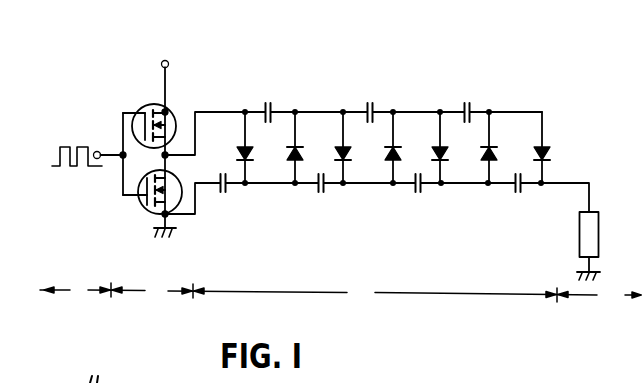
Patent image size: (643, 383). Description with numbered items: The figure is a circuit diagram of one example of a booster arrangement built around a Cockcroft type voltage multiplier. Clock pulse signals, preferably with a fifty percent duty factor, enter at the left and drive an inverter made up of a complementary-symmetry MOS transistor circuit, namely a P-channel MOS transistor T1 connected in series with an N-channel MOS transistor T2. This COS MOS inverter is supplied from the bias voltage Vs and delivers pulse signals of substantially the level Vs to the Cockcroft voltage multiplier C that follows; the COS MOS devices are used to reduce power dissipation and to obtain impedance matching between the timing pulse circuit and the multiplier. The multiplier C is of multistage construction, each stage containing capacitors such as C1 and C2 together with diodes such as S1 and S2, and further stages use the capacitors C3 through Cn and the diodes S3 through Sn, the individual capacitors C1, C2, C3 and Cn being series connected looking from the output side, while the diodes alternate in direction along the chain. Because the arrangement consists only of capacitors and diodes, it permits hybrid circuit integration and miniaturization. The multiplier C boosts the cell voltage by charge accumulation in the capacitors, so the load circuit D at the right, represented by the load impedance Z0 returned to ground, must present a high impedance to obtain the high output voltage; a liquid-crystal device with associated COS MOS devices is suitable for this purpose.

The bias voltage level Vs is at (177, 78).
The P-channel MOS transistor T1 is at (146, 91).
The N-channel MOS transistor T2 is at (143, 209).
The diode S1 is at (228, 147).
The diode S2 is at (281, 147).
The diode S3 is at (330, 147).
The diode Sn is at (557, 147).
The capacitor C1 is at (222, 195).
The capacitor C2 is at (273, 102).
The capacitor C3 is at (320, 195).
The capacitor Cn is at (519, 197).
The load impedance Z0 is at (599, 230).
The Cockcroft type voltage multiplier stage C is at (361, 294).
The load circuit D is at (604, 298).